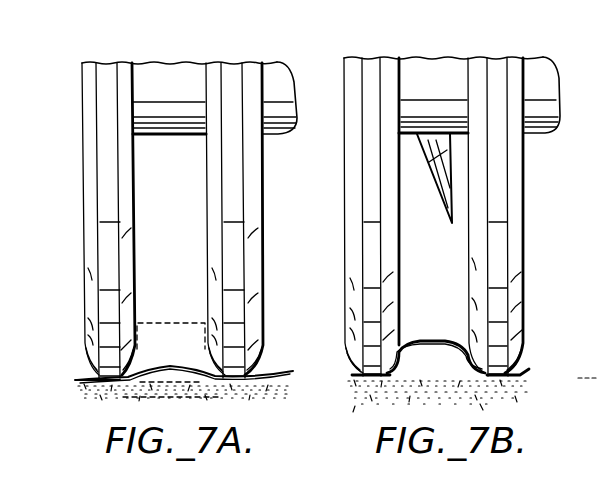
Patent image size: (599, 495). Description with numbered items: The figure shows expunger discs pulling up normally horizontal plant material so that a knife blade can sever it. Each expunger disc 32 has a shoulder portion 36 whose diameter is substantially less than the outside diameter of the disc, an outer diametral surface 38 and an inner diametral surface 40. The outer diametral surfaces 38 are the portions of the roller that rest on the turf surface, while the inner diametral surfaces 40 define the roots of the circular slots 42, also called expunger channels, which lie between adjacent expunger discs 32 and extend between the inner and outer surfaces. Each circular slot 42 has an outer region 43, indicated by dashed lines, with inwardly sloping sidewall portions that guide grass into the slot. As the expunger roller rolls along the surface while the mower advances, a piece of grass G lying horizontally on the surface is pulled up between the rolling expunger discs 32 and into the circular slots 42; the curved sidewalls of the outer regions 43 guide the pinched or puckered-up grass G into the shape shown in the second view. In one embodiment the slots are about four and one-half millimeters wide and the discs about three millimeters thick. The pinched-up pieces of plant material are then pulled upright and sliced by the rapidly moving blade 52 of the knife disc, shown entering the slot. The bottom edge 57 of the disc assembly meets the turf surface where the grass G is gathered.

In FIG. 7A, the expunger disc 32 is at (92, 127).
In FIG. 7B, the expunger disc 32 is at (433, 217).
In FIG. 7A, the shoulder portion 36 is at (183, 63).
In FIG. 7B, the shoulder portion 36 is at (452, 95).
In FIG. 7A, the outer diametral surface 38 is at (236, 244).
In FIG. 7A, the inner diametral surface 40 is at (150, 137).
In FIG. 7B, the inner diametral surface 40 is at (433, 116).
In FIG. 7A, the circular slot 42 is at (179, 233).
In FIG. 7A, the outer region 43 is at (155, 323).
In FIG. 7B, the blade 52 is at (448, 119).
In FIG. 7A, the bottom edge / sill 57 is at (97, 380).
In FIG. 7A, the grass G is at (172, 372).
In FIG. 7B, the grass G is at (422, 340).